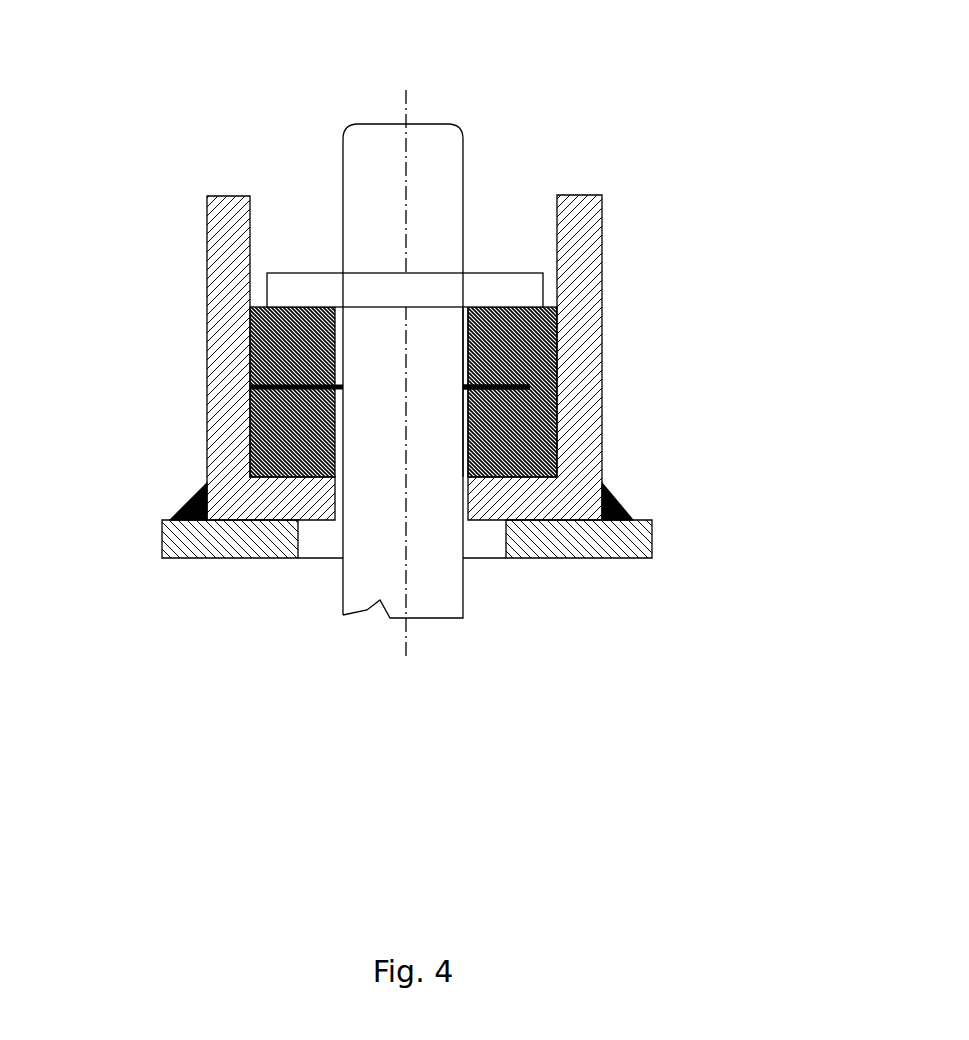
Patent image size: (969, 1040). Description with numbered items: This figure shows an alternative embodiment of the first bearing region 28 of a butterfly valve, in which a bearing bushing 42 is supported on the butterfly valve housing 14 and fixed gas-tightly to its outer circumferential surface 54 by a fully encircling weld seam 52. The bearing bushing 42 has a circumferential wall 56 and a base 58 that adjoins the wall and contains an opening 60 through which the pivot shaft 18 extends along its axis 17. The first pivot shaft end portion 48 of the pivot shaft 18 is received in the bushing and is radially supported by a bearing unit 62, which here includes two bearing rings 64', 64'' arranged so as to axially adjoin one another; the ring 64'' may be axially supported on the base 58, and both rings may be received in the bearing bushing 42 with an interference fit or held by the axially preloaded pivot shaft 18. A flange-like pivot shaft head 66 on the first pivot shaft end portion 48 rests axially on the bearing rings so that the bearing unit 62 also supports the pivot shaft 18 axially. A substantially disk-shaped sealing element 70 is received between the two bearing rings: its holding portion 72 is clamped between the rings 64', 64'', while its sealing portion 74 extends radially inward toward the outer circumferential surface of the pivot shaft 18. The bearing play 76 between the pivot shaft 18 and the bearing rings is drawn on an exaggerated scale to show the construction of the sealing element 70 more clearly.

The butterfly valve housing 14 is at (640, 540).
The longitudinal axis 17 is at (407, 652).
The pivot shaft 18 is at (382, 598).
The first bearing region 28 is at (663, 140).
The bearing bushing 42 is at (575, 195).
The first pivot shaft end portion 48 is at (437, 165).
The weld seam 52 is at (618, 502).
The outer circumferential surface 54 is at (170, 518).
The circumferential wall 56 is at (223, 313).
The base 58 is at (260, 553).
The opening 60 is at (337, 500).
The bearing unit 62 is at (212, 270).
The bearing ring 64' is at (664, 227).
The bearing ring 64'' is at (598, 561).
The pivot shaft head 66 is at (287, 270).
The sealing element 70 is at (490, 387).
The holding portion 72 is at (243, 408).
The sealing portion 74 is at (520, 380).
The gap 76 is at (463, 390).